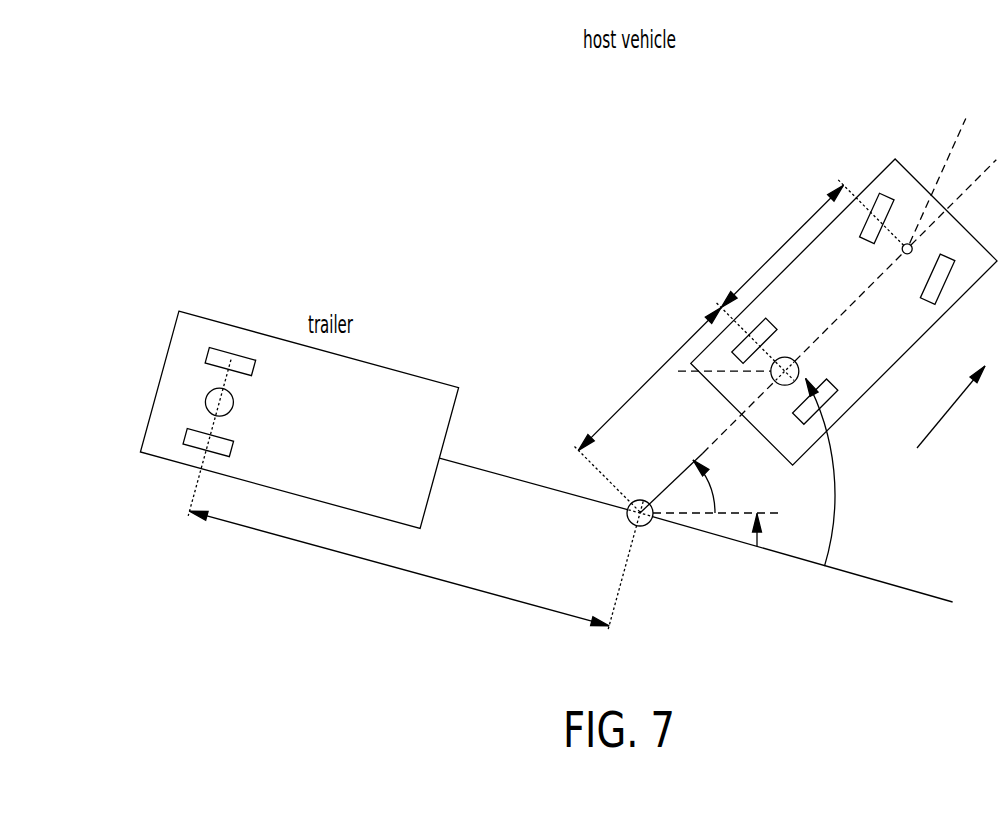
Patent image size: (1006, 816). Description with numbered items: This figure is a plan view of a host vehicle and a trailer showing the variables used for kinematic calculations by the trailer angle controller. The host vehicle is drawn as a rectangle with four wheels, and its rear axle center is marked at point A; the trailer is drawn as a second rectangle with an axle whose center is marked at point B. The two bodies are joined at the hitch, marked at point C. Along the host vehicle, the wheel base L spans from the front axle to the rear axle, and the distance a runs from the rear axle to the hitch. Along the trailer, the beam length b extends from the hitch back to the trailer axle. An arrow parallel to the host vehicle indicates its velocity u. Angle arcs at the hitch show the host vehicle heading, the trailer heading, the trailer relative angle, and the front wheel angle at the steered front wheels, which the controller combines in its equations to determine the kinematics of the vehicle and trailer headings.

The host vehicle rear axle center A is at (805, 364).
The trailer axle center B is at (204, 406).
The hitch point C is at (649, 533).
The host vehicle wheel base L is at (782, 246).
The distance from the rear axle to the hitch a is at (649, 379).
The beam length of the vehicle b is at (400, 568).
The host vehicle velocity u is at (951, 407).